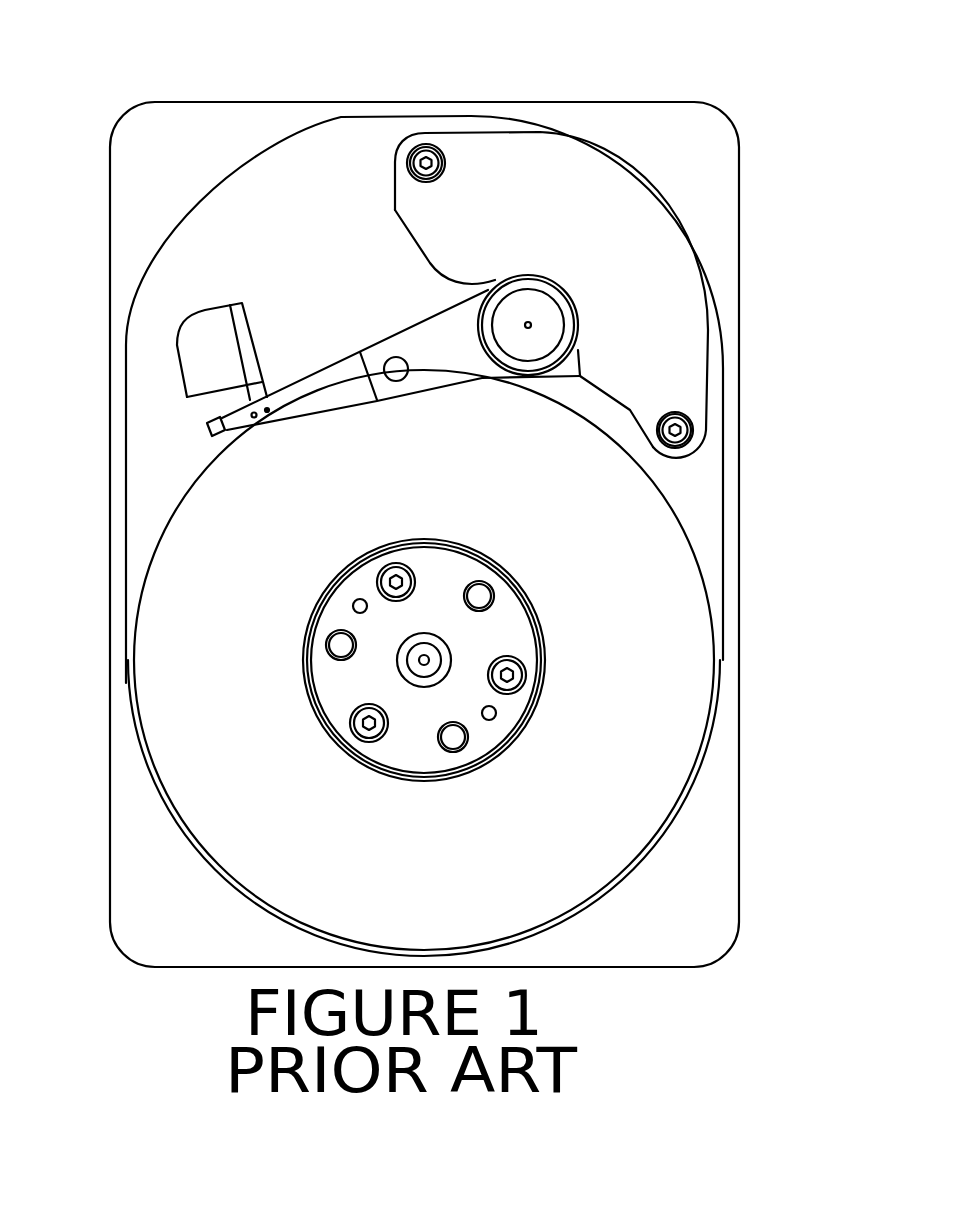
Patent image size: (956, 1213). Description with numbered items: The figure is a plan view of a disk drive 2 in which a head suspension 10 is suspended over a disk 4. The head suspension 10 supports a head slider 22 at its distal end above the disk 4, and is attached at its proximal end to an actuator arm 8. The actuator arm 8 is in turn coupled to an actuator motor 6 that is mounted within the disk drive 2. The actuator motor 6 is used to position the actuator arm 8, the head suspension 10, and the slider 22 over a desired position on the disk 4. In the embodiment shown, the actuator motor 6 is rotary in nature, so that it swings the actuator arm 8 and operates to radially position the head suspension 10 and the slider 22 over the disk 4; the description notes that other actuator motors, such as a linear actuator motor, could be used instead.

The disk drive 2 is at (565, 65).
The disk 4 is at (572, 883).
The actuator motor 6 is at (540, 318).
The actuator arm 8 is at (437, 340).
The head suspension 10 is at (320, 405).
The head slider 22 is at (220, 417).